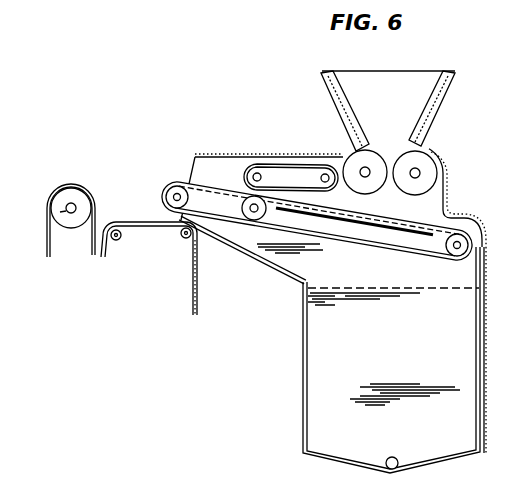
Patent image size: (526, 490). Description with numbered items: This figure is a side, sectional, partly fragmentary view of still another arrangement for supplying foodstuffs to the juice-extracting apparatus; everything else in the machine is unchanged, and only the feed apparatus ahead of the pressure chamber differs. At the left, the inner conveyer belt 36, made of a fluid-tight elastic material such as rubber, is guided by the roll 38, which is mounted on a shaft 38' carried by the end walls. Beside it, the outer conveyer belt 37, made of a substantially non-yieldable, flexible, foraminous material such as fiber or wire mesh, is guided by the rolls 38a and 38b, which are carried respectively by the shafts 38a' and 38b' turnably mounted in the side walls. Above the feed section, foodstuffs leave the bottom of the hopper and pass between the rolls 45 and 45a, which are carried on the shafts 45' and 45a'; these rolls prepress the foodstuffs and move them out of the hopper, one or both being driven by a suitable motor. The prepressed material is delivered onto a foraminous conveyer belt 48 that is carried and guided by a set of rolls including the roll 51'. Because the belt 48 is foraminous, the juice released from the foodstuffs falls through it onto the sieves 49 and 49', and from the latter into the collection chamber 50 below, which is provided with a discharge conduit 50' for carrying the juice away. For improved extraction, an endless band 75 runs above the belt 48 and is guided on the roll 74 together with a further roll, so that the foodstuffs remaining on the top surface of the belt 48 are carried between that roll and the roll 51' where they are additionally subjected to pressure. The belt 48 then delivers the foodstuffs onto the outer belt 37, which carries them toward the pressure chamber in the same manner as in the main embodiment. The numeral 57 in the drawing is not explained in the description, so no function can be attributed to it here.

The inner conveyer belt 36 is at (46, 240).
The outer conveyer belt 37 is at (148, 222).
The roll 38 is at (72, 188).
The shaft 38′ is at (60, 207).
The roll 38a is at (116, 241).
The shaft 38a′ is at (121, 237).
The roll 38b is at (184, 240).
The shaft 38b′ is at (198, 240).
The roll 45 is at (346, 160).
The shaft 45′ is at (369, 169).
The roll 45a is at (436, 160).
The shaft 45a′ is at (416, 178).
The foraminous conveyer belt 48 is at (425, 241).
The sieve 49 is at (354, 230).
The sieve 49′ is at (377, 289).
The collection chamber 50 is at (304, 369).
The discharge conduit 50′ is at (396, 457).
The roll 51′ is at (245, 198).
The housing 57 is at (247, 156).
The roll 74 is at (304, 165).
The endless band 75 is at (271, 164).